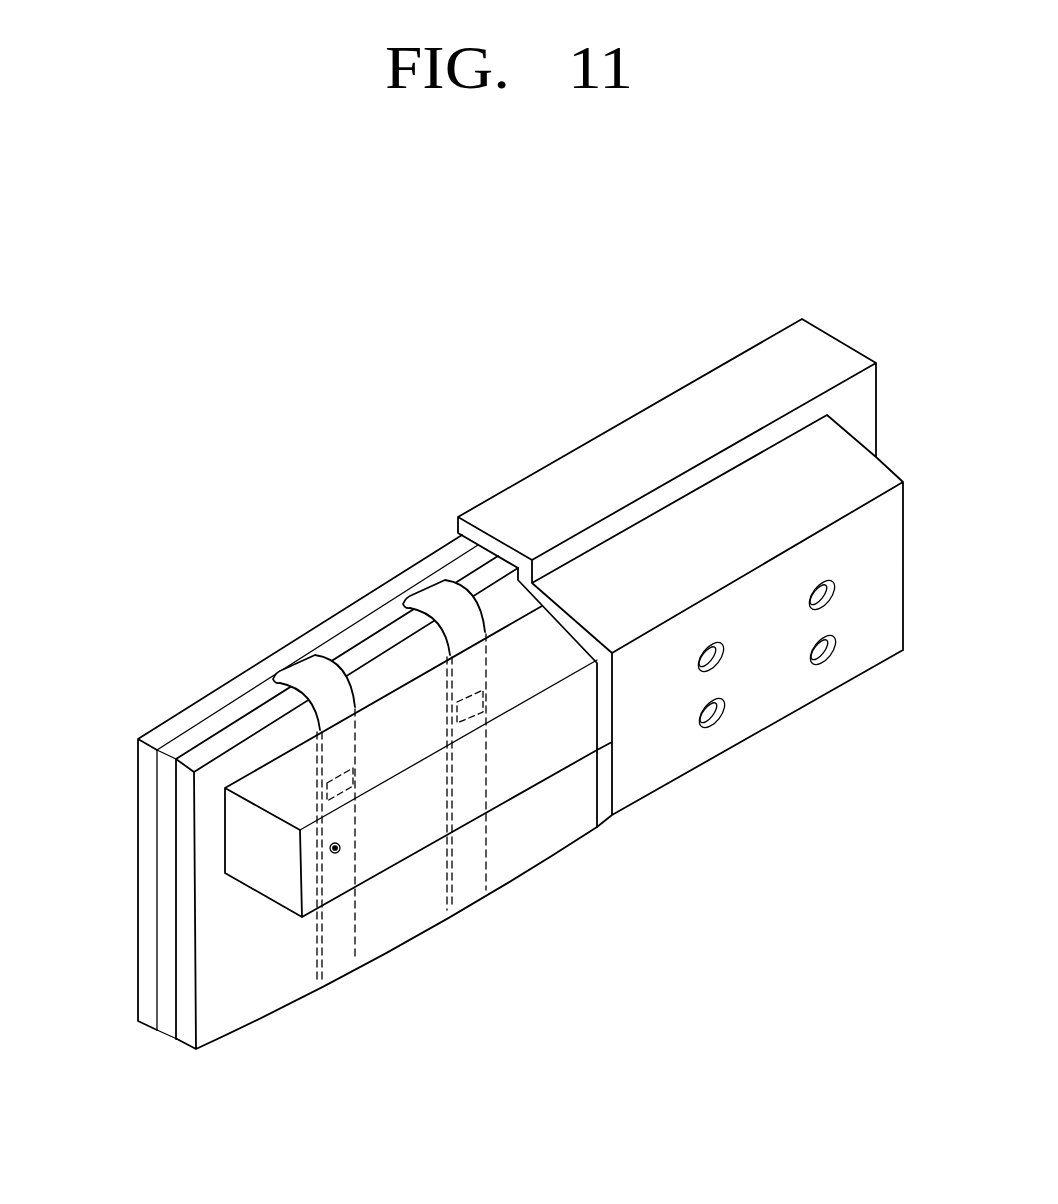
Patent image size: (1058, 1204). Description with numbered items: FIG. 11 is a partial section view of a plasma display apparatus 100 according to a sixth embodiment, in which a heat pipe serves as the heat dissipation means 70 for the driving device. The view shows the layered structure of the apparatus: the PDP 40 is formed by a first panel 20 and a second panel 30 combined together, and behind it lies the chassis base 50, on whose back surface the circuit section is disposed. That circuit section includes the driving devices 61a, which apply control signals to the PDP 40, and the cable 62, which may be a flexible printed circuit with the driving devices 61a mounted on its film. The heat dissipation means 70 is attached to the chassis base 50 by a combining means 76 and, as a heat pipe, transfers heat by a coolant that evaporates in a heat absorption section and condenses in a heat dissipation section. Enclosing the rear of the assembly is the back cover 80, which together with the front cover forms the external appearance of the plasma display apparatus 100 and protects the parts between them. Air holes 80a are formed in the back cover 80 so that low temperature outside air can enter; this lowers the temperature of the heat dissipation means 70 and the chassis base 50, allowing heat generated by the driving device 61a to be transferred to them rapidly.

The first panel 20 is at (160, 737).
The second panel 30 is at (207, 730).
The PDP 40 is at (293, 787).
The chassis base 50 is at (263, 722).
The cable 62 is at (308, 668).
The driving device 61a is at (337, 790).
The heat dissipation means 70 is at (257, 837).
The combining means 76 is at (333, 853).
The back cover 80 is at (680, 579).
The air holes 80a is at (714, 724).
The plasma display apparatus 100 is at (480, 692).